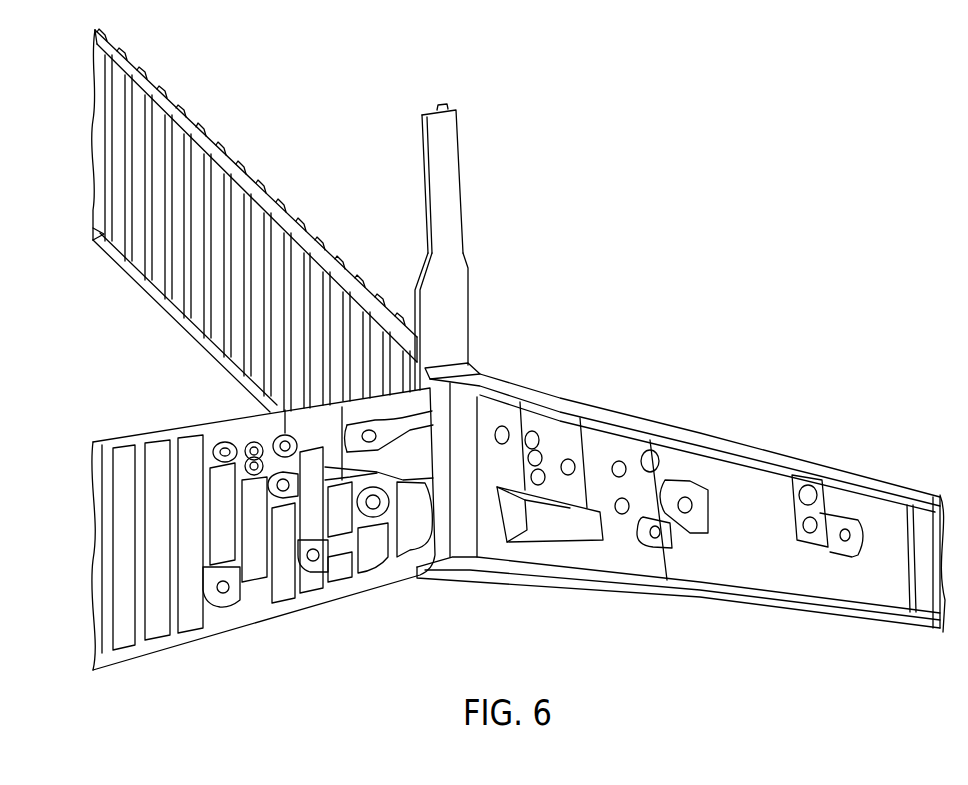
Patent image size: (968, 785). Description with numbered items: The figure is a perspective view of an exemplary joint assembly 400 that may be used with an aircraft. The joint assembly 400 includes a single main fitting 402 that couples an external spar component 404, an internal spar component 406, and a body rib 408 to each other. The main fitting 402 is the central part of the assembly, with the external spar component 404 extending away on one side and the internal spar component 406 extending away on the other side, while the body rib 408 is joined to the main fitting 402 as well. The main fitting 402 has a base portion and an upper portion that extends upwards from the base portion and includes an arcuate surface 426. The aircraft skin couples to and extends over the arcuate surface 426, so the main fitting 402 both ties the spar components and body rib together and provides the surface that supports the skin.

The joint assembly 400 is at (622, 204).
The main fitting 402 is at (447, 308).
The external spar component 404 is at (725, 443).
The internal spar component 406 is at (205, 138).
The body rib 408 is at (105, 504).
The arcuate surface 426 is at (445, 157).